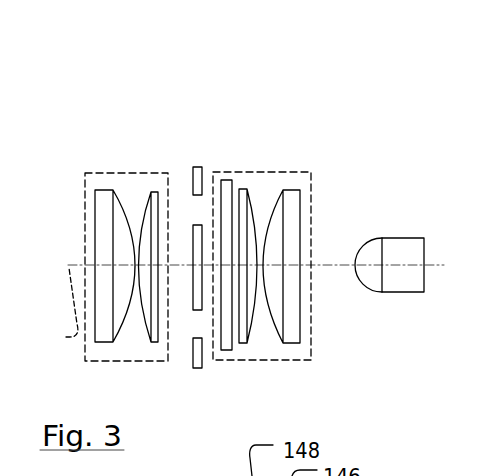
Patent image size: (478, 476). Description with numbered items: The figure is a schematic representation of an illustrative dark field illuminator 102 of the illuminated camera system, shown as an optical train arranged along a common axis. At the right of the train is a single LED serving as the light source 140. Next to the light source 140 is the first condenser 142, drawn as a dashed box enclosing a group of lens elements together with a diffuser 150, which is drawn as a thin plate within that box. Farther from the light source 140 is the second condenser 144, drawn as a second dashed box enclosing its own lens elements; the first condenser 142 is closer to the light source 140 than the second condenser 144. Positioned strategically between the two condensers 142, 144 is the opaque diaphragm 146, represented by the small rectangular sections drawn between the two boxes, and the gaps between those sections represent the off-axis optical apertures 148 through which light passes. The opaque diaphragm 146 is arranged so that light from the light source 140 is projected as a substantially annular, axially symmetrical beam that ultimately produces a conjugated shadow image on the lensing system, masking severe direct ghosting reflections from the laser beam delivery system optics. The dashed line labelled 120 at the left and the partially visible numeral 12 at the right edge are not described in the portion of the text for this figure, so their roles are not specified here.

The dark field illuminator 102 is at (153, 89).
The second condenser 144 is at (129, 172).
The opaque diaphragm 146 is at (197, 167).
The off-axis optical apertures 148 is at (197, 212).
The first condenser 142 is at (297, 172).
The diffuser 150 is at (227, 178).
The light source 140 is at (392, 240).
The light beam 120 is at (64, 337).
The housing 12 is at (470, 317).